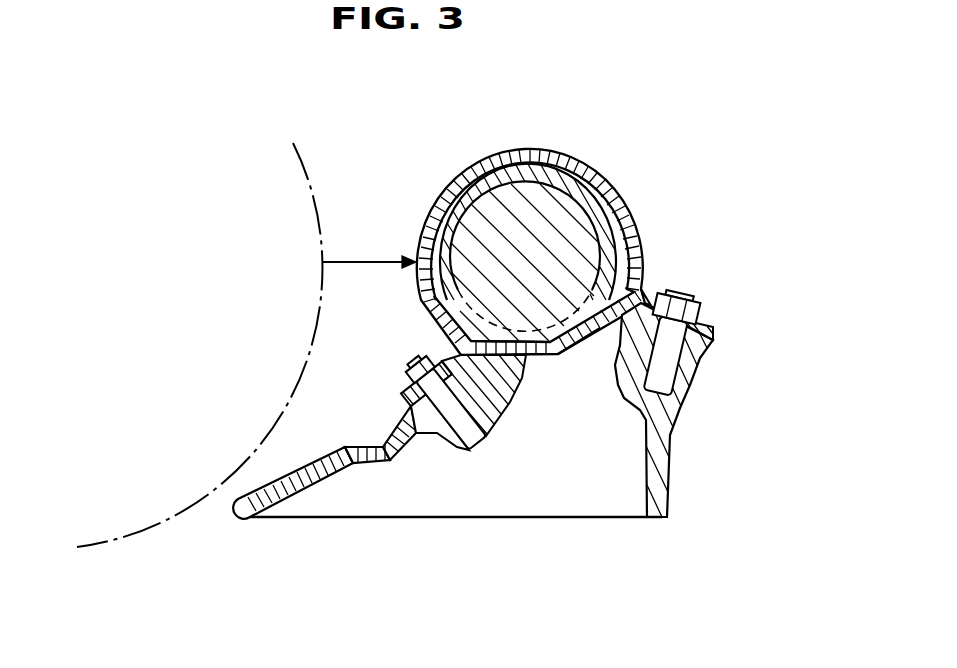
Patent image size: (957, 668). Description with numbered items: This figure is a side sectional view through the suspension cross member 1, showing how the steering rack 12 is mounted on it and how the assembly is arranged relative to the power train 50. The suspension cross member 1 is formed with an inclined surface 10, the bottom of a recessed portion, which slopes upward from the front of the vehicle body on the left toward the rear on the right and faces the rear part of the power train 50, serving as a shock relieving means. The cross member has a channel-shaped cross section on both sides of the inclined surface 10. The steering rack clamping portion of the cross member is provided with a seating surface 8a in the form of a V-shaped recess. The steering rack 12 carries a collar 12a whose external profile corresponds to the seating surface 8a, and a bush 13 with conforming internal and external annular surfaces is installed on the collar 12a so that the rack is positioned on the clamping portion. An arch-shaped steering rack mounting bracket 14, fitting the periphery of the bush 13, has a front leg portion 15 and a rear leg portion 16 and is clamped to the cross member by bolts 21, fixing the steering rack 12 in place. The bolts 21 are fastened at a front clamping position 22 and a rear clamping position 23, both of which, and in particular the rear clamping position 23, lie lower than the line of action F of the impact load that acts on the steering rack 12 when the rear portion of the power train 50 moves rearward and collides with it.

The suspension cross member 1 is at (688, 455).
The seating surface 8a is at (553, 345).
The inclined surface 10 is at (278, 476).
The steering rack 12 is at (517, 190).
The collar 12a is at (587, 340).
The bush 13 is at (575, 168).
The steering rack mounting bracket 14 is at (603, 187).
The front leg portion 15 is at (432, 352).
The rear leg portion 16 is at (649, 290).
The bolts 21 is at (406, 376).
The front clamping position 22 is at (396, 397).
The rear clamping position 23 is at (706, 310).
The power train 50 is at (166, 519).
The line of action of the impact load F is at (373, 256).